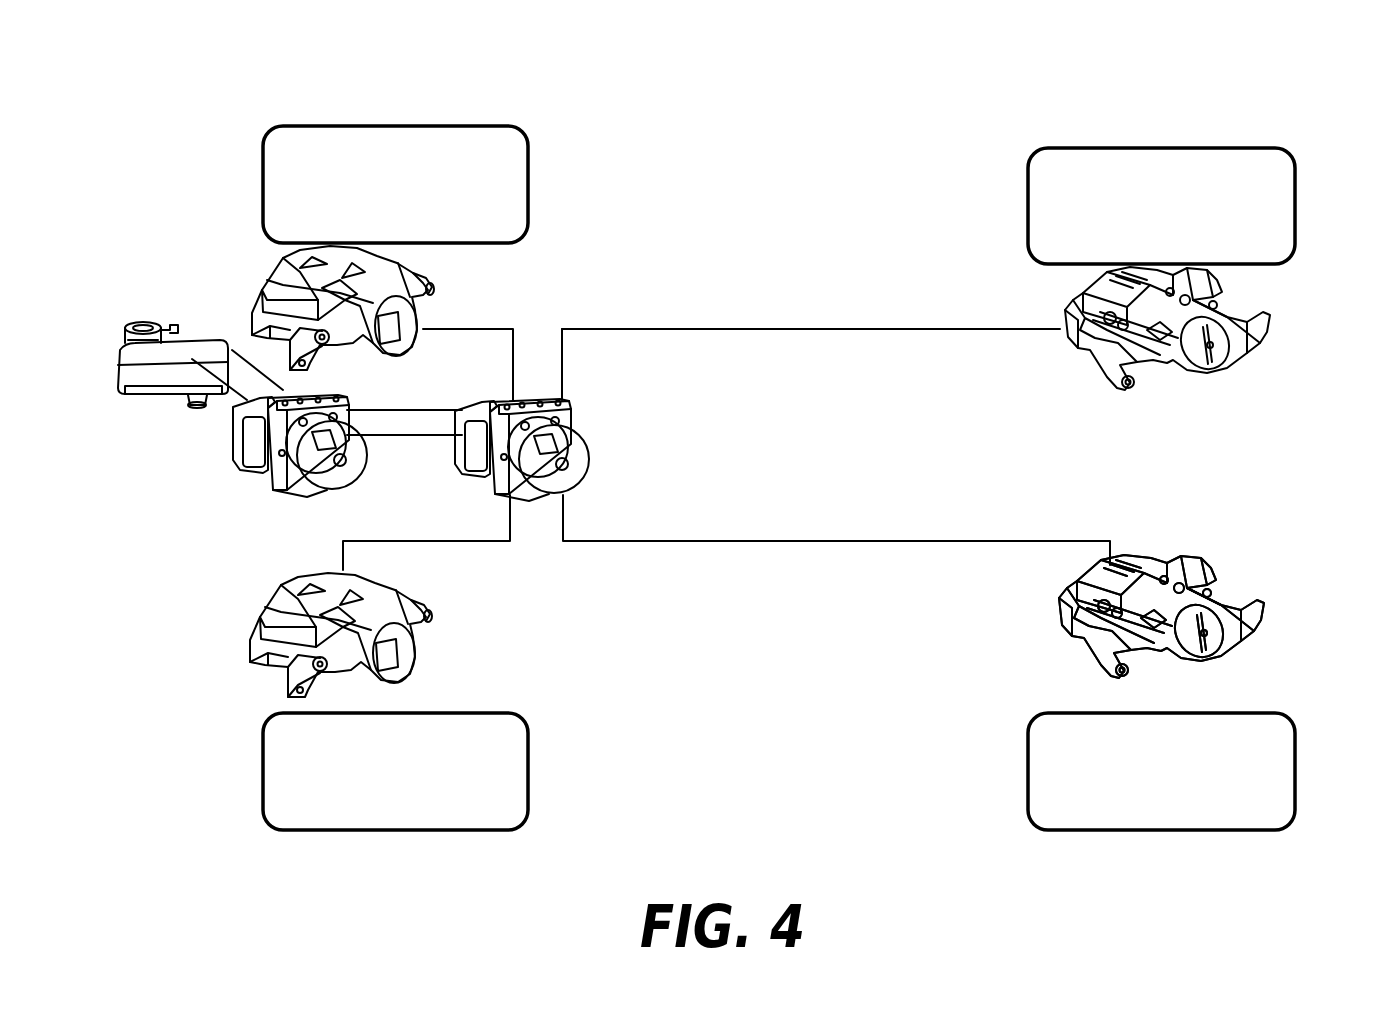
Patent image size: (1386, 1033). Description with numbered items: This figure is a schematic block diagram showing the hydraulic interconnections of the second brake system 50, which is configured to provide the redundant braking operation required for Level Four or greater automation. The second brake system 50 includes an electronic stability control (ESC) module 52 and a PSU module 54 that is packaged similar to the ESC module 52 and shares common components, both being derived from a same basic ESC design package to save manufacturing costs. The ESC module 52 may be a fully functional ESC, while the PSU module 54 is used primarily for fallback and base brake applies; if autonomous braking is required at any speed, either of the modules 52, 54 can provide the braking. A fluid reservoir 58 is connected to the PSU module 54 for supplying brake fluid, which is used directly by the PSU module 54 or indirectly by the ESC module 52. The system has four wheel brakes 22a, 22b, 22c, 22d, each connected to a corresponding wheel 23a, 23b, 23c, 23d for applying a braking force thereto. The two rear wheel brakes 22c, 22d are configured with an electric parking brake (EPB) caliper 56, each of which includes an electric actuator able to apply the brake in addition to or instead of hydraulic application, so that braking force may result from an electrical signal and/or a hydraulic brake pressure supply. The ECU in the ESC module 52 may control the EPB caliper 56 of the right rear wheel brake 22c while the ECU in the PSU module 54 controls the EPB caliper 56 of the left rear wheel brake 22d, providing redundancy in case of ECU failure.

The second brake system 50 is at (158, 210).
The wheel brake 22a is at (262, 600).
The wheel brake 22b is at (262, 273).
The rear wheel brake 22c is at (1183, 577).
The rear wheel brake 22d is at (1200, 300).
The wheel 23a is at (460, 713).
The wheel 23b is at (458, 126).
The wheel 23c is at (1262, 713).
The wheel 23d is at (1190, 148).
The electronic stability control (ESC) module 52 is at (578, 411).
The PSU module 54 is at (358, 407).
The electric parking brake (EPB) caliper 56 is at (1161, 616).
The fluid reservoir 58 is at (115, 345).